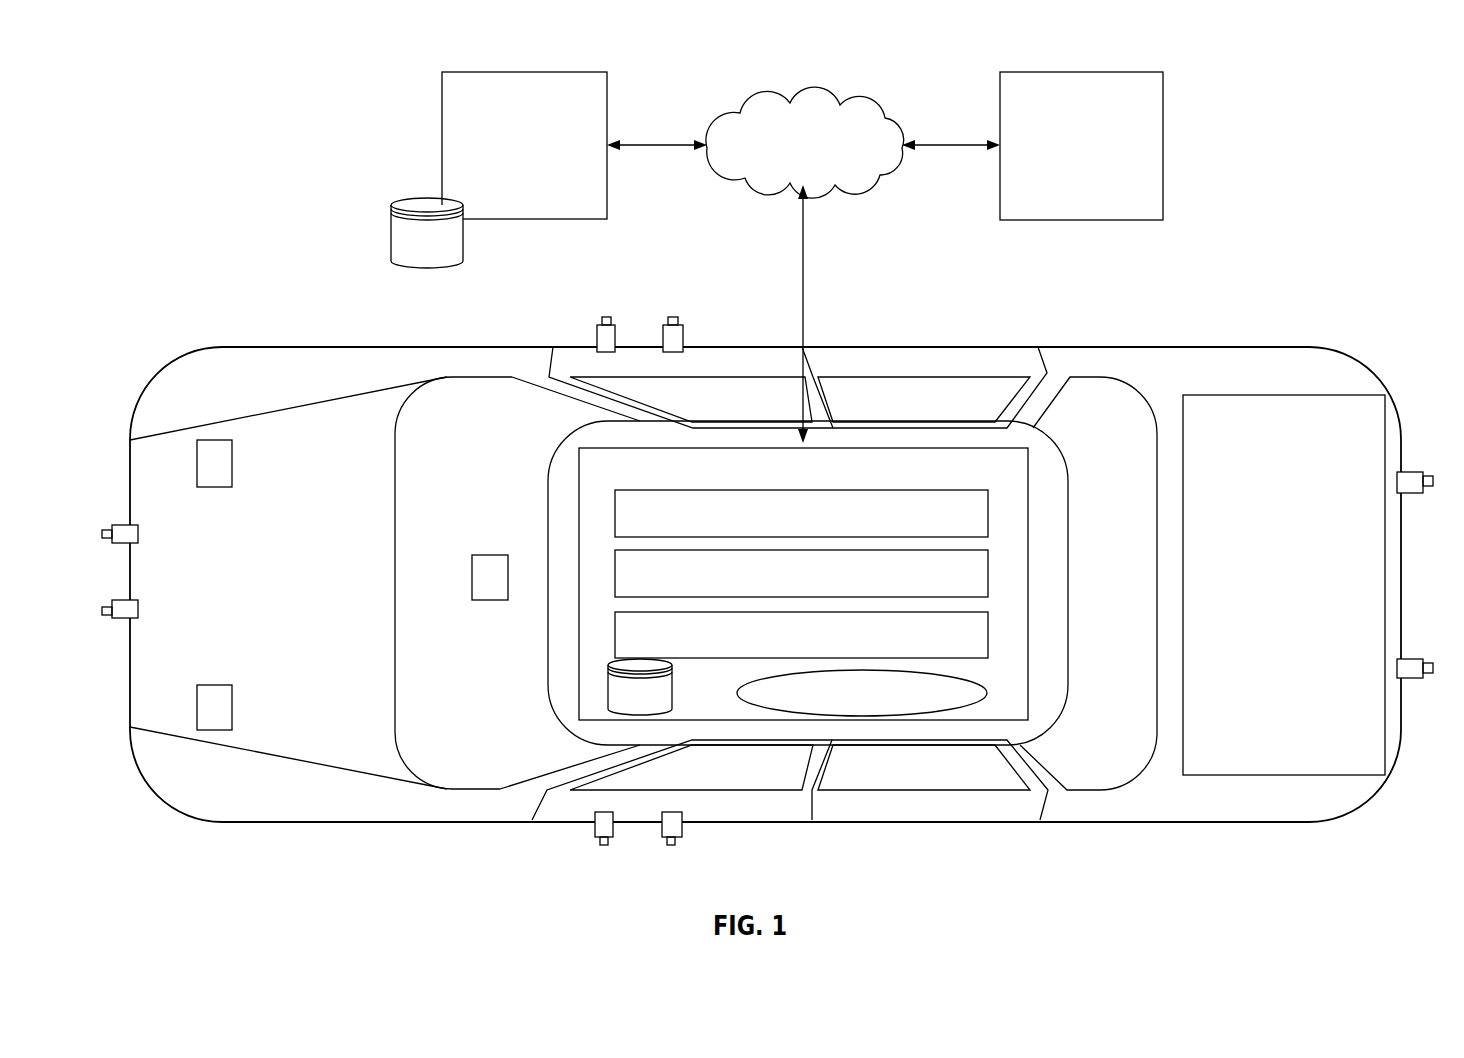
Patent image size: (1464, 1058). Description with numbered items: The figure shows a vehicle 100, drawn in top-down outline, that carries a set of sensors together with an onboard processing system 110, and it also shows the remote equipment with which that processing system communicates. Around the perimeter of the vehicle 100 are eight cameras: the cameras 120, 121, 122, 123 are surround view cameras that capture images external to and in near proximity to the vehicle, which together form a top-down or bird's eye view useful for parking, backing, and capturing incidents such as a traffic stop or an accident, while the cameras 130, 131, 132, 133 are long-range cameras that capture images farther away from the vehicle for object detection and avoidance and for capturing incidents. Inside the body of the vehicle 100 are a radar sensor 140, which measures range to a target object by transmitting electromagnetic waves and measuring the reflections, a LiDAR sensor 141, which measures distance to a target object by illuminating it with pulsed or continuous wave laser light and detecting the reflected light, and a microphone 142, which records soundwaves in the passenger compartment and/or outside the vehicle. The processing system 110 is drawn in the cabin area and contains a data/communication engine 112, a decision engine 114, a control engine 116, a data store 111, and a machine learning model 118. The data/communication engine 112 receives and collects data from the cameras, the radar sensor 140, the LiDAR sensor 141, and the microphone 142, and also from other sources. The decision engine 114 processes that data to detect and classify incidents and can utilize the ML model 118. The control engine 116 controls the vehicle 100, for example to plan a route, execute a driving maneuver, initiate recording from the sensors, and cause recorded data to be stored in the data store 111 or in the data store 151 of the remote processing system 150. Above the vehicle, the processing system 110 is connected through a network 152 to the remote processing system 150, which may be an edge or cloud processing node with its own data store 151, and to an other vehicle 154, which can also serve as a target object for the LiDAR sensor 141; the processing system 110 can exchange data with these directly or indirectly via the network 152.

The vehicle 100 is at (282, 347).
The processing system 110 is at (578, 478).
The data store 111 is at (657, 707).
The data/communication engine 112 is at (927, 483).
The decision engine 114 is at (965, 587).
The control engine 116 is at (965, 647).
The machine learning (ML) model 118 is at (952, 707).
The camera 120 is at (122, 525).
The camera 121 is at (604, 845).
The camera 122 is at (605, 317).
The camera 123 is at (1413, 472).
The camera 130 is at (118, 618).
The camera 131 is at (670, 845).
The camera 132 is at (672, 317).
The camera 133 is at (1413, 678).
The radar sensor 140 is at (213, 487).
The LiDAR sensor 141 is at (215, 685).
The microphone 142 is at (490, 555).
The remote processing system 150 is at (507, 72).
The data store 151 is at (447, 257).
The network 152 is at (752, 110).
The other vehicle 154 is at (1067, 72).